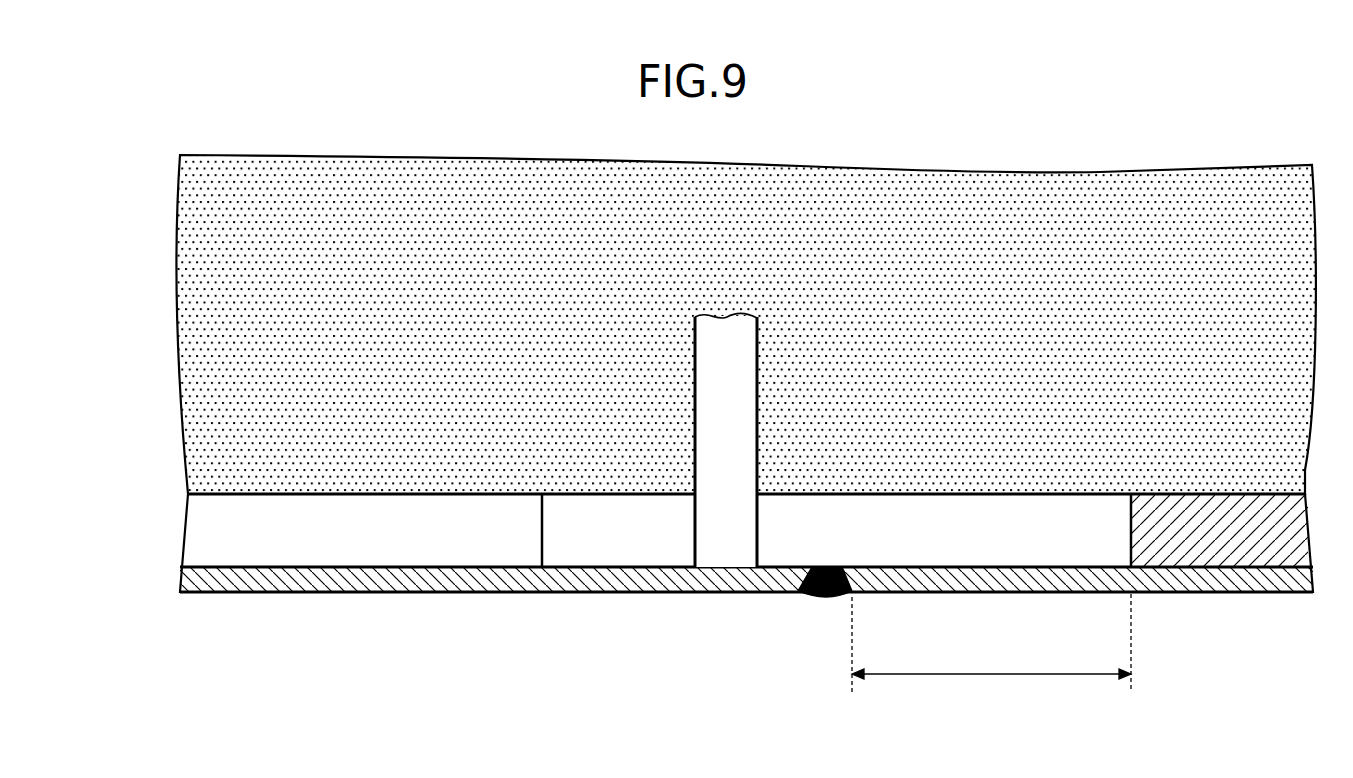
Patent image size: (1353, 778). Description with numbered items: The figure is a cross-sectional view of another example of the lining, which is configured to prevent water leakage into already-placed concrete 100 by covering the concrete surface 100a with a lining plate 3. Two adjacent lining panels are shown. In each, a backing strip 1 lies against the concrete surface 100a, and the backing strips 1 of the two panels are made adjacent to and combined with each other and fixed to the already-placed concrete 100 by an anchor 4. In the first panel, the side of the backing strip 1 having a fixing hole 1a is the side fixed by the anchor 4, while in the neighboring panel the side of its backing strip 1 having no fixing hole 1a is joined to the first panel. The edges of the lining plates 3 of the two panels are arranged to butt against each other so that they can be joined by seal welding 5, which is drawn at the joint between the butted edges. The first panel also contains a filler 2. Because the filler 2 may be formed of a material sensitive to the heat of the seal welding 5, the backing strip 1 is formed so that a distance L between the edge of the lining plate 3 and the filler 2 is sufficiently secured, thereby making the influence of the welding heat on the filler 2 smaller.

The already-placed concrete 100 is at (186, 280).
The concrete surface 100a is at (219, 497).
The backing strip 1 is at (419, 548).
The fixing hole 1a is at (757, 549).
The filler 2 is at (1243, 555).
The lining plate 3 is at (590, 578).
The anchor 4 is at (717, 548).
The seal welding 5 is at (827, 599).
The distance L is at (985, 675).